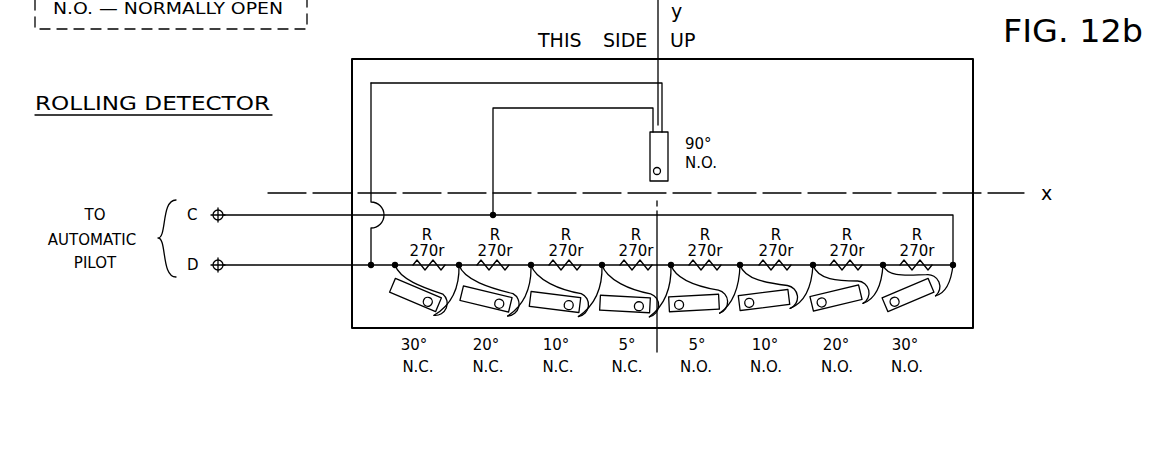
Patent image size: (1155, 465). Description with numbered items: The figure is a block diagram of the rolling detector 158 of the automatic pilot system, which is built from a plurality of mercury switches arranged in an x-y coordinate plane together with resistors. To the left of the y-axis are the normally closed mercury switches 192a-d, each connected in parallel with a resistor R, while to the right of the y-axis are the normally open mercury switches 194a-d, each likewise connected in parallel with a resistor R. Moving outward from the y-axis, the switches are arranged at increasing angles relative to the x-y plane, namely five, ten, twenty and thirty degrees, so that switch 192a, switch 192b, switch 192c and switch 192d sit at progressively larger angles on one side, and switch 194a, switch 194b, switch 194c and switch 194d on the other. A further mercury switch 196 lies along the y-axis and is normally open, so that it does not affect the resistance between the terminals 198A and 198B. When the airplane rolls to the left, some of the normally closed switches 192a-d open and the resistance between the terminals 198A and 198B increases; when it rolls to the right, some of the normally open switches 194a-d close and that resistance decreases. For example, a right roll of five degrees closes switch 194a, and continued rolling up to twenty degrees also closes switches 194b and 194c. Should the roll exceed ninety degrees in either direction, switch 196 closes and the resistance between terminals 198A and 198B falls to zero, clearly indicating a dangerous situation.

The rolling detector 158 is at (975, 110).
The mercury switch 196 is at (649, 157).
The terminal 198A is at (221, 204).
The terminal 198B is at (220, 271).
The mercury switches 192a-d is at (380, 277).
The mercury switch 192a is at (620, 305).
The mercury switch 192b is at (548, 303).
The mercury switch 192c is at (477, 299).
The mercury switch 192d is at (407, 298).
The mercury switches 194a-d is at (945, 277).
The mercury switch 194a is at (705, 309).
The mercury switch 194b is at (775, 306).
The mercury switch 194c is at (845, 302).
The mercury switch 194d is at (915, 298).